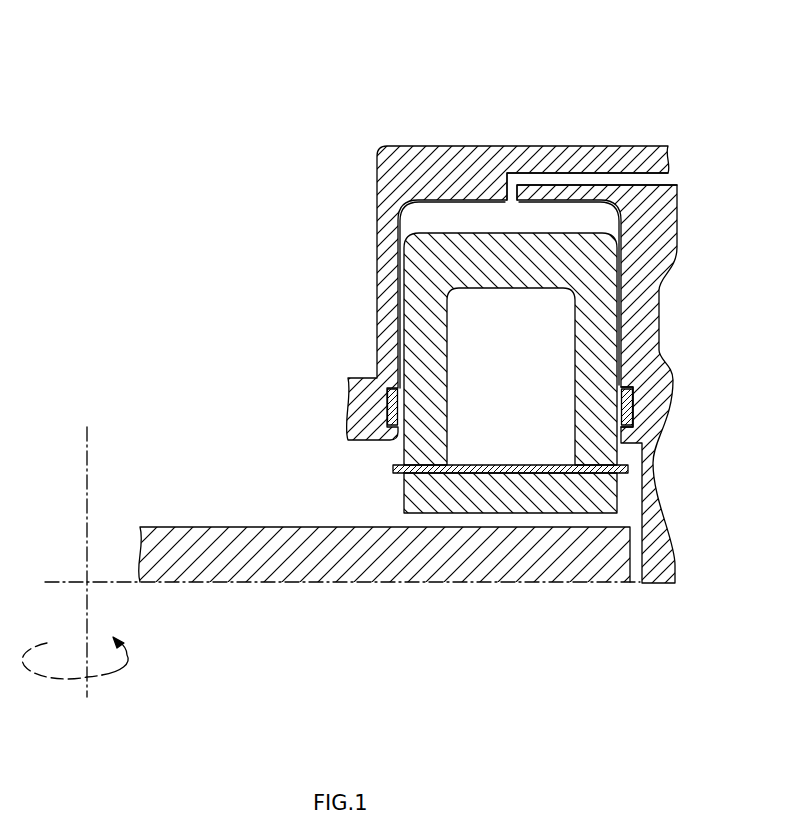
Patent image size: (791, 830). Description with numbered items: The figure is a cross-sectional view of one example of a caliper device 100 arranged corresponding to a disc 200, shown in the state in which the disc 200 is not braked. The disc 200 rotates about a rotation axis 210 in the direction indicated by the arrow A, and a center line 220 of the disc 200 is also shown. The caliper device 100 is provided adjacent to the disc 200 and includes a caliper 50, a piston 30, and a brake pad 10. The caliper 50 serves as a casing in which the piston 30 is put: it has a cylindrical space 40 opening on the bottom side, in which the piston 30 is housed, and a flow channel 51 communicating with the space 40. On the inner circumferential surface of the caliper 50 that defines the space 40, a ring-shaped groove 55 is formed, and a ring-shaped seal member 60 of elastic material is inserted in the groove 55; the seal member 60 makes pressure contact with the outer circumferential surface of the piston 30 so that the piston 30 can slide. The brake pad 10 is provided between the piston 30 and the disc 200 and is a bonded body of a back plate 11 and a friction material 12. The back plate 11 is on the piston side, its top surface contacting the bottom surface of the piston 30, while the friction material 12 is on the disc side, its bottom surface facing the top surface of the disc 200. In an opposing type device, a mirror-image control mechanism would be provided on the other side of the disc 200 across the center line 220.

The caliper device 100 is at (673, 82).
The caliper 50 is at (615, 143).
The flow channel 51 is at (552, 178).
The space 40 is at (423, 222).
The piston 30 is at (422, 352).
The groove 55 is at (632, 372).
The seal member 60 is at (632, 412).
The brake pad 10 is at (461, 485).
The back plate 11 is at (395, 472).
The friction material 12 is at (407, 500).
The disc 200 is at (410, 563).
The rotation axis 210 is at (87, 428).
The center line 220 is at (67, 580).
The arrow A is at (75, 648).